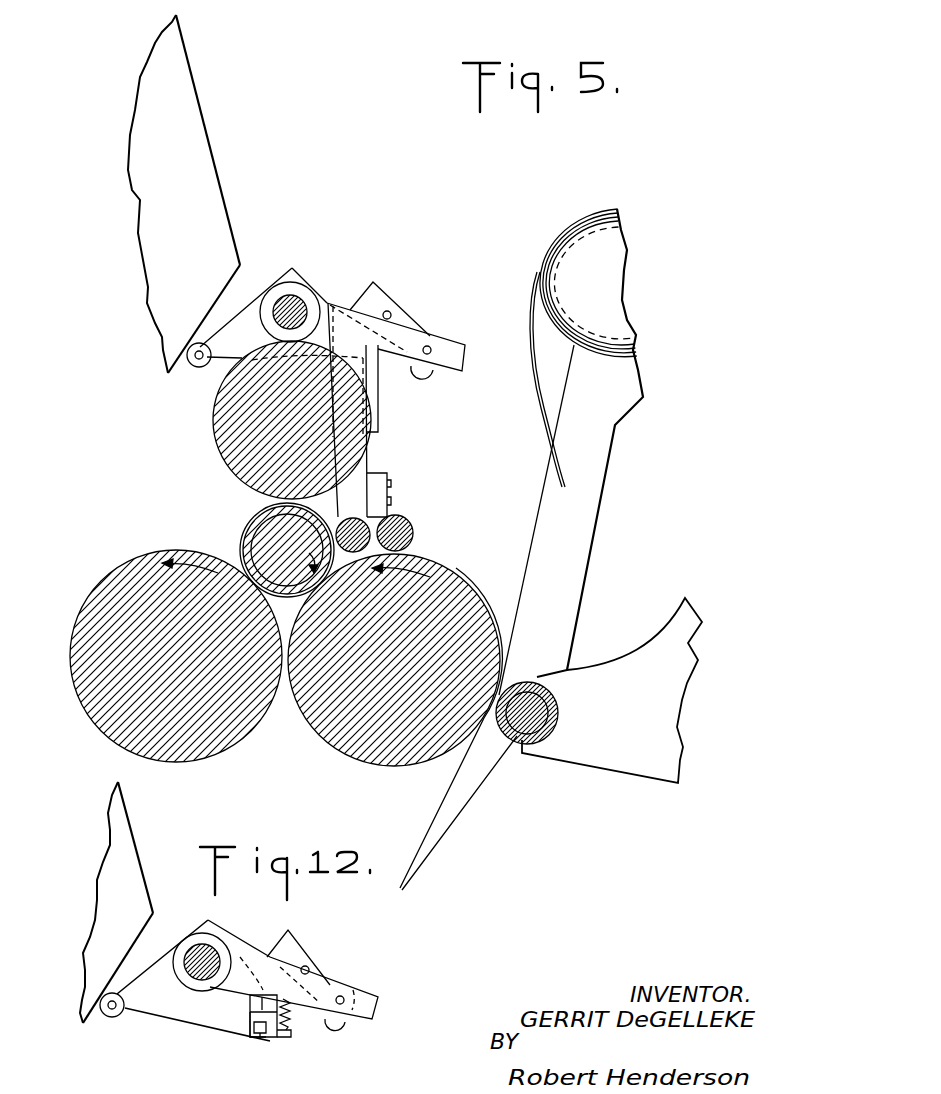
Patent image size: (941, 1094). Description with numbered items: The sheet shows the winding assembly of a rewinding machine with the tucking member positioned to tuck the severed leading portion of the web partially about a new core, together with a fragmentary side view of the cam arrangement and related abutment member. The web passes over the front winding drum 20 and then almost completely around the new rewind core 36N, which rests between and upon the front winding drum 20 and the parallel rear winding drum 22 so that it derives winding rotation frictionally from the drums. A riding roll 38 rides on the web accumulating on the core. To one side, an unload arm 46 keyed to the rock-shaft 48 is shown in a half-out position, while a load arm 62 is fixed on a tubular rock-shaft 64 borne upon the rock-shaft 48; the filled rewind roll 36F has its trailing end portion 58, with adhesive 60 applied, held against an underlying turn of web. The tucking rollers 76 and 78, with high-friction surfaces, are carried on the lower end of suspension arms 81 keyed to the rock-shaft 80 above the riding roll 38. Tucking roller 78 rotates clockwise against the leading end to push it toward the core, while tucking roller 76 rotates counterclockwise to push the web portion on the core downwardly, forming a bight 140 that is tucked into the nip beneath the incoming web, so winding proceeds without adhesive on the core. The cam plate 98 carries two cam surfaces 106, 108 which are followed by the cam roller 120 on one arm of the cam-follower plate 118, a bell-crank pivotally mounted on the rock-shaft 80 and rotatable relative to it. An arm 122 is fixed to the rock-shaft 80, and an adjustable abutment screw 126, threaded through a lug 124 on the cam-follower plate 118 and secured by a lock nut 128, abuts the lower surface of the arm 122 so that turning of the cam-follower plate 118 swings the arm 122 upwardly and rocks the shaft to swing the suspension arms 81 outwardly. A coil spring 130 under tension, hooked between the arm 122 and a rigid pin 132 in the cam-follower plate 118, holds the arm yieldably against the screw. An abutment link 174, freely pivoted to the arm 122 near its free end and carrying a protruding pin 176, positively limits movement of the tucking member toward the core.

In FIG. 5, the front winding drum 20 is at (366, 746).
In FIG. 5, the rear winding drum 22 is at (90, 710).
In FIG. 5, the filled rewind roll 36F is at (603, 247).
In FIG. 5, the new rewind core 36N is at (260, 538).
In FIG. 5, the riding roll 38 is at (212, 420).
In FIG. 5, the unload arm 46 is at (595, 487).
In FIG. 5, the rock-shaft 48 is at (512, 740).
In FIG. 5, the trailing end portion 58 is at (535, 410).
In FIG. 5, the adhesive 60 is at (557, 457).
In FIG. 5, the load arm 62 is at (632, 767).
In FIG. 5, the tubular rock-shaft 64 is at (503, 733).
In FIG. 5, the tucking roller 76 is at (268, 510).
In FIG. 5, the tucking roller 78 is at (413, 528).
In FIG. 5, the rock-shaft 80 is at (298, 300).
In FIG. 12, the rock-shaft 80 is at (214, 946).
In FIG. 5, the suspension arm 81 is at (380, 410).
In FIG. 5, the cam plate 98 is at (147, 220).
In FIG. 12, the cam plate 98 is at (103, 922).
In FIG. 5, the cam surface 106 is at (196, 116).
In FIG. 12, the cam surface 106 is at (134, 849).
In FIG. 5, the cam surface 108 is at (210, 300).
In FIG. 12, the cam surface 108 is at (126, 959).
In FIG. 5, the cam-follower plate 118 is at (248, 305).
In FIG. 12, the cam-follower plate 118 is at (194, 1010).
In FIG. 5, the cam roller 120 is at (191, 367).
In FIG. 12, the cam roller 120 is at (113, 1018).
In FIG. 5, the arm 122 is at (465, 346).
In FIG. 12, the arm 122 is at (320, 990).
In FIG. 12, the lug 124 is at (270, 1022).
In FIG. 12, the adjustable abutment screw 126 is at (258, 1036).
In FIG. 12, the lock nut 128 is at (255, 1022).
In FIG. 12, the coil spring 130 is at (292, 1008).
In FIG. 12, the rigid pin 132 is at (288, 1021).
In FIG. 5, the bight 140 is at (346, 561).
In FIG. 5, the abutment link 174 is at (410, 318).
In FIG. 12, the abutment link 174 is at (322, 968).
In FIG. 5, the pin 176 is at (388, 310).
In FIG. 12, the pin 176 is at (306, 965).